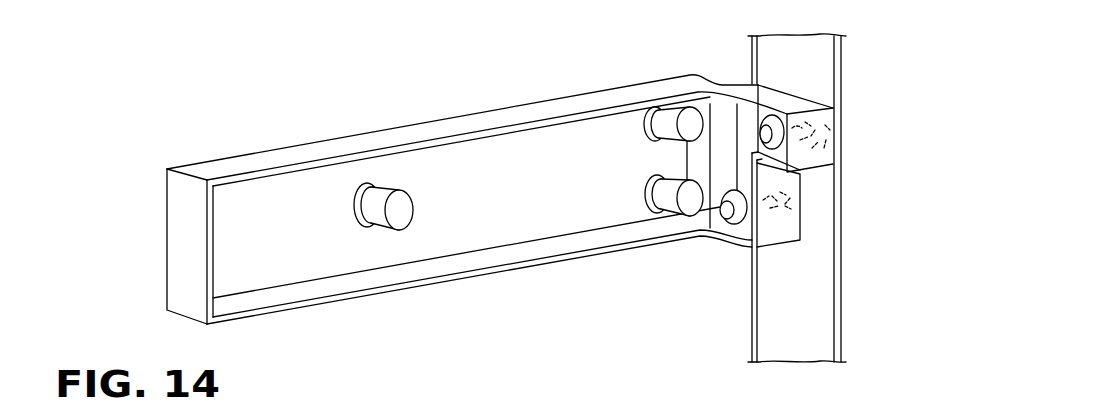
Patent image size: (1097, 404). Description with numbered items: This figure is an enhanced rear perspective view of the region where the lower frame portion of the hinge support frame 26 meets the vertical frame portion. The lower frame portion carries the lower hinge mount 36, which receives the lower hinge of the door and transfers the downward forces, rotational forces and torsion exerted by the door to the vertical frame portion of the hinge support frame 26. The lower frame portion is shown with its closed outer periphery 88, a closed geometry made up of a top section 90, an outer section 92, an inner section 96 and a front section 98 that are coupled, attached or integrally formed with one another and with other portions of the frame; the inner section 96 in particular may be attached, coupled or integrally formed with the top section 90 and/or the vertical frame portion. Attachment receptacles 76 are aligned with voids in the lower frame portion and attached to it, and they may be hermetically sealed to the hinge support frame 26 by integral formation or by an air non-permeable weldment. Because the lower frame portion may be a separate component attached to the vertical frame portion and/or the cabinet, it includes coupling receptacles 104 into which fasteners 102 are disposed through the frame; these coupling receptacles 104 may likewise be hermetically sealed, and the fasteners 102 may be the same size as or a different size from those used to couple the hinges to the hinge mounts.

The hinge support frame 26 is at (838, 54).
The lower hinge mount 36 is at (588, 137).
The attachment receptacles 76 is at (380, 210).
The closed outer periphery 88 is at (181, 242).
The top section 90 is at (288, 160).
The outer section 92 is at (192, 220).
The inner section 96 is at (797, 100).
The front section 98 is at (482, 187).
The fasteners 102 is at (822, 150).
The coupling receptacles 104 is at (765, 115).